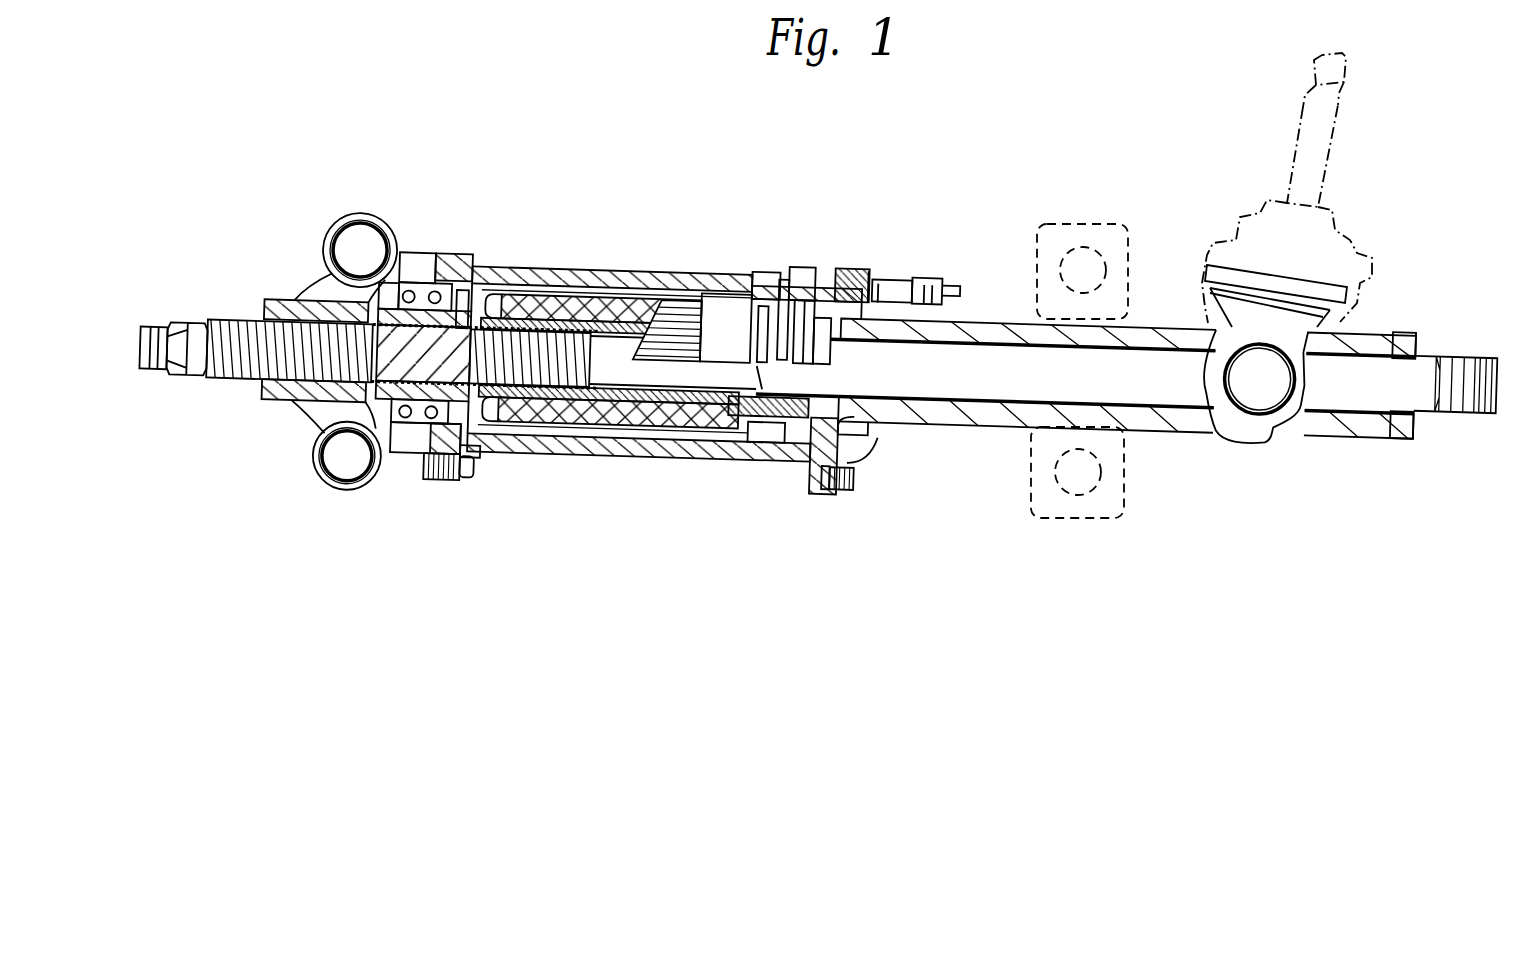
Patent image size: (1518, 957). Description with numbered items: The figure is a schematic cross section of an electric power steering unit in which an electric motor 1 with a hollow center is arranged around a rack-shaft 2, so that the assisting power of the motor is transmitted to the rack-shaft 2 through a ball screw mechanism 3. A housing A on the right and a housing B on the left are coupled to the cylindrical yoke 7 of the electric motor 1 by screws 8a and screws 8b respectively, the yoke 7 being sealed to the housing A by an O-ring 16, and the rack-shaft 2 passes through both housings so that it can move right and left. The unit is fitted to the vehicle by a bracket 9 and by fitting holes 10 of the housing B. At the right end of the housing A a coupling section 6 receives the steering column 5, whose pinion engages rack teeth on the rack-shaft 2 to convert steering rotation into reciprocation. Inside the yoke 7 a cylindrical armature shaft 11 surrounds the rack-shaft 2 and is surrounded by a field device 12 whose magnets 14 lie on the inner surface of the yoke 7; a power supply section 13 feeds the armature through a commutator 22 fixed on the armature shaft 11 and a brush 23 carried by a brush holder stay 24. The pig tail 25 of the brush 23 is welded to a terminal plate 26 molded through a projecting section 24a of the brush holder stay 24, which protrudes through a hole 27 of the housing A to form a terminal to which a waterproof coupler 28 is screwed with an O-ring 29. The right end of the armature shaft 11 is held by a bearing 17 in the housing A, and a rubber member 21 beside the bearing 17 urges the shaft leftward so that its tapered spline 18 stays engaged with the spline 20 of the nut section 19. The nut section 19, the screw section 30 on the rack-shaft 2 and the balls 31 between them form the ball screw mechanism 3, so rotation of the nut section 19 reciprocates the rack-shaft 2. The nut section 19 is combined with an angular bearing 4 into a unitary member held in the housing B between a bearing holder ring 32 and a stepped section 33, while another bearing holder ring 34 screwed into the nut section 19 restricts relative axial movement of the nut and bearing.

The electric motor 1 is at (555, 262).
The rack-shaft 2 is at (1012, 378).
The ball screw mechanism 3 is at (413, 420).
The angular bearing 4 is at (413, 267).
The steering column 5 is at (1305, 135).
The coupling section 6 is at (1262, 390).
The yoke 7 is at (687, 425).
The screws 8a is at (820, 457).
The screws 8b is at (473, 470).
The bracket 9 is at (1083, 214).
The fitting holes 10 is at (345, 245).
The armature shaft 11 is at (660, 425).
The field device 12 is at (625, 300).
The power supply section 13 is at (770, 430).
The magnets 14 is at (608, 430).
The O-ring 16 is at (800, 440).
The bearing 17 is at (867, 428).
The tapered spline 18 is at (493, 287).
The nut section 19 is at (408, 425).
The spline 20 is at (473, 277).
The rubber member 21 is at (883, 425).
The commutator 22 is at (750, 293).
The brush 23 is at (747, 430).
The brush holder stay 24 is at (797, 297).
The projecting section 24a is at (837, 277).
The pig tail 25 is at (466, 287).
The terminal plate 26 is at (777, 297).
The hole 27 is at (877, 277).
The coupler 28 is at (933, 282).
The O-ring 29 is at (880, 277).
The screw section 30 is at (285, 418).
The balls 31 is at (427, 473).
The bearing holder ring 32 is at (483, 453).
The stepped section 33 is at (353, 493).
The bearing holder ring 34 is at (387, 280).
The housing A is at (1182, 419).
The housing B is at (300, 300).